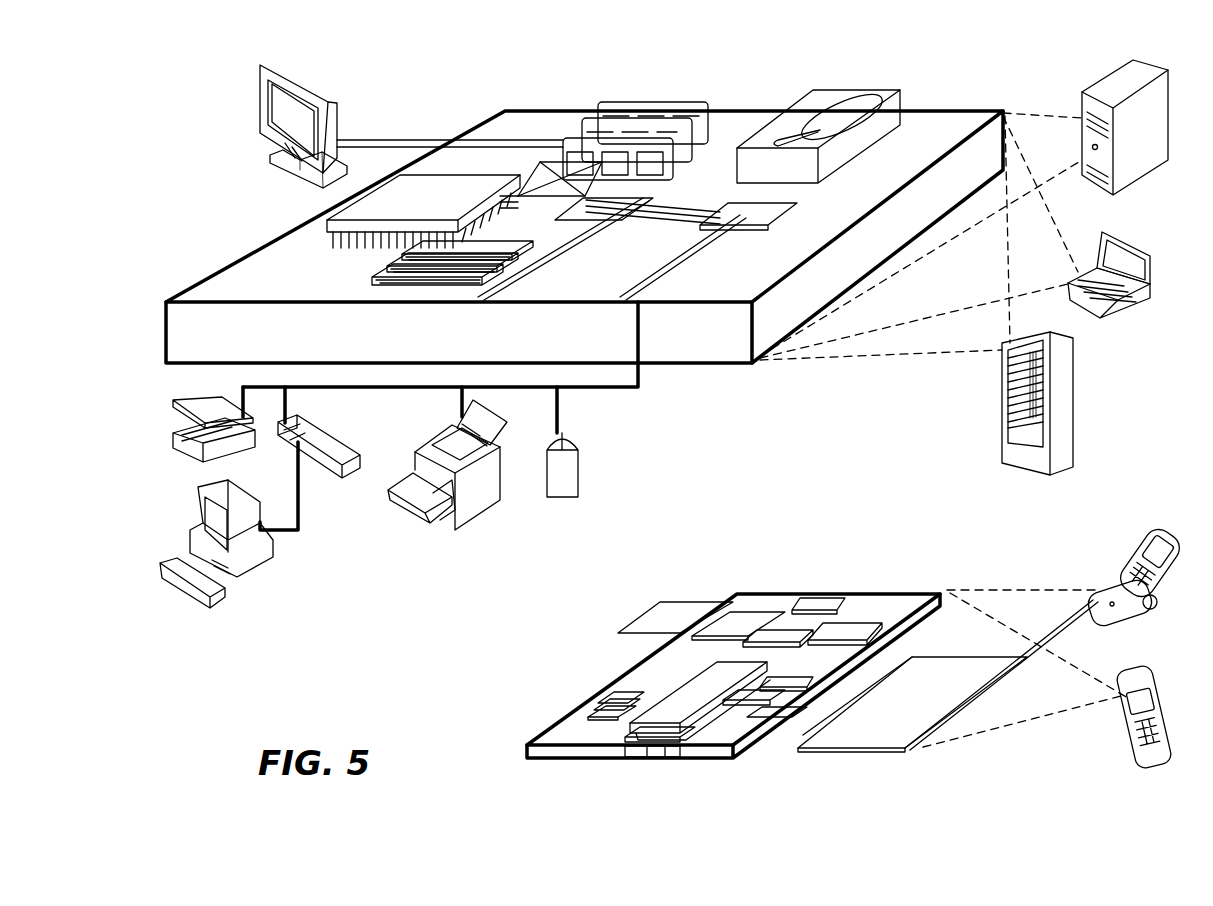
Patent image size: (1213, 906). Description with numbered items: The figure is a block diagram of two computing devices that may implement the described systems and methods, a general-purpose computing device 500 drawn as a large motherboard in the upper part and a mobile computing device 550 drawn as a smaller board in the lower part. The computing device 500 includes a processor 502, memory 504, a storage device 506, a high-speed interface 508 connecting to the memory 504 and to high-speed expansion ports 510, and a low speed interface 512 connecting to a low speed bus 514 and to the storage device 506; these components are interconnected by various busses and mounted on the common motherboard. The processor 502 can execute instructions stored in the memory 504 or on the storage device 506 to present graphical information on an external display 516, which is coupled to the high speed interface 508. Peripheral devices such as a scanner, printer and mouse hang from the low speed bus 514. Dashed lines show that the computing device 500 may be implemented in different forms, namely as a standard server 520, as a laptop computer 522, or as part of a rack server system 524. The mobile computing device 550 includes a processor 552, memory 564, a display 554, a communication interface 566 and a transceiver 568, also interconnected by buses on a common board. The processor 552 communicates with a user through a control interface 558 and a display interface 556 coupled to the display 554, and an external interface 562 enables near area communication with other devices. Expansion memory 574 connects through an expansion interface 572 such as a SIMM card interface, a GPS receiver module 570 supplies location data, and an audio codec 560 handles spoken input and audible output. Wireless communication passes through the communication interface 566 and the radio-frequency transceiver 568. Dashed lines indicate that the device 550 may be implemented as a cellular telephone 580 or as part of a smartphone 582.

The computing device 500 is at (438, 76).
The processor 502 is at (332, 229).
The memory 504 is at (618, 103).
The storage device 506 is at (815, 96).
The high-speed interface 508 is at (543, 195).
The high-speed expansion ports 510 is at (389, 268).
The low speed interface 512 is at (746, 208).
The low speed bus 514 is at (644, 337).
The display 516 is at (262, 73).
The standard server 520 is at (1084, 96).
The laptop computer 522 is at (1104, 234).
The rack server system 524 is at (1000, 427).
The computing device 550 is at (721, 560).
The processor 552 is at (659, 746).
The display 554 is at (906, 748).
The display interface 556 is at (748, 734).
The control interface 558 is at (776, 712).
The audio codec 560 is at (790, 694).
The external interface 562 is at (652, 760).
The memory 564 is at (605, 712).
The communication interface 566 is at (772, 628).
The transceiver 568 is at (852, 628).
The GPS receiver module 570 is at (826, 598).
The expansion interface 572 is at (713, 614).
The expansion memory 574 is at (650, 610).
The cellular telephone 580 is at (1150, 540).
The smartphone 582 is at (1138, 684).